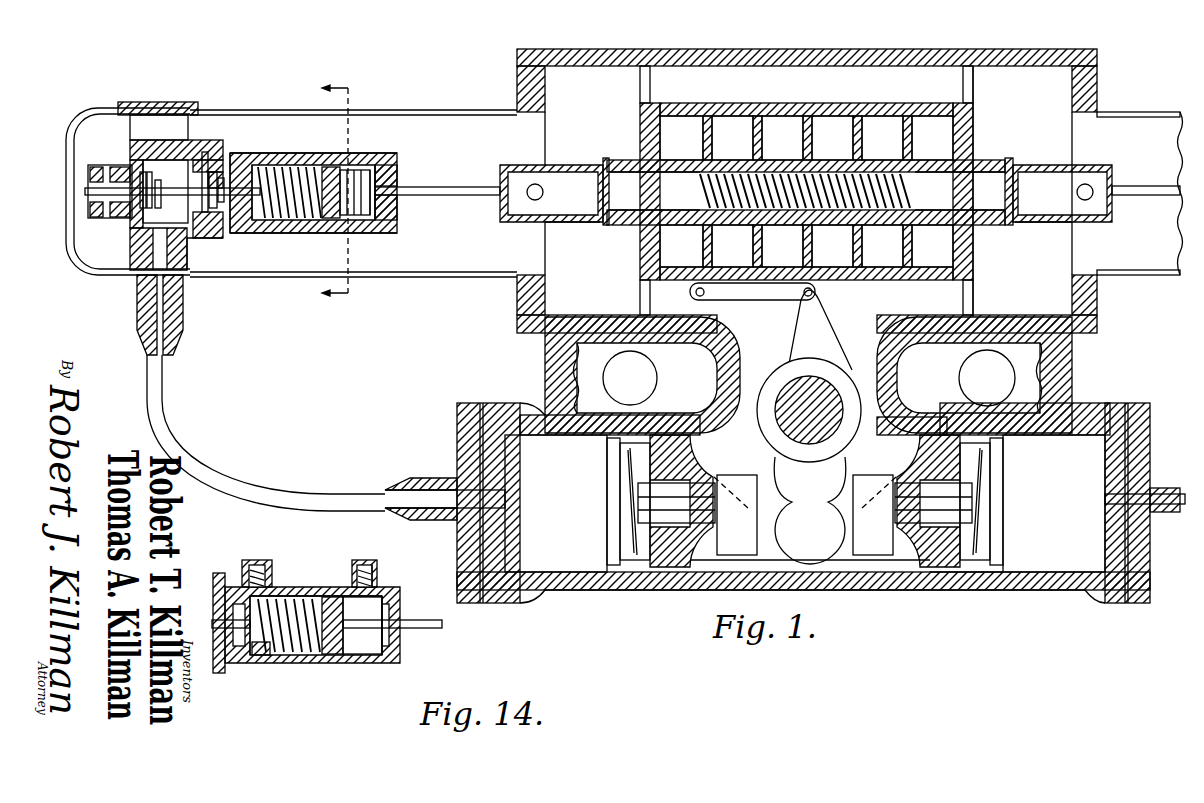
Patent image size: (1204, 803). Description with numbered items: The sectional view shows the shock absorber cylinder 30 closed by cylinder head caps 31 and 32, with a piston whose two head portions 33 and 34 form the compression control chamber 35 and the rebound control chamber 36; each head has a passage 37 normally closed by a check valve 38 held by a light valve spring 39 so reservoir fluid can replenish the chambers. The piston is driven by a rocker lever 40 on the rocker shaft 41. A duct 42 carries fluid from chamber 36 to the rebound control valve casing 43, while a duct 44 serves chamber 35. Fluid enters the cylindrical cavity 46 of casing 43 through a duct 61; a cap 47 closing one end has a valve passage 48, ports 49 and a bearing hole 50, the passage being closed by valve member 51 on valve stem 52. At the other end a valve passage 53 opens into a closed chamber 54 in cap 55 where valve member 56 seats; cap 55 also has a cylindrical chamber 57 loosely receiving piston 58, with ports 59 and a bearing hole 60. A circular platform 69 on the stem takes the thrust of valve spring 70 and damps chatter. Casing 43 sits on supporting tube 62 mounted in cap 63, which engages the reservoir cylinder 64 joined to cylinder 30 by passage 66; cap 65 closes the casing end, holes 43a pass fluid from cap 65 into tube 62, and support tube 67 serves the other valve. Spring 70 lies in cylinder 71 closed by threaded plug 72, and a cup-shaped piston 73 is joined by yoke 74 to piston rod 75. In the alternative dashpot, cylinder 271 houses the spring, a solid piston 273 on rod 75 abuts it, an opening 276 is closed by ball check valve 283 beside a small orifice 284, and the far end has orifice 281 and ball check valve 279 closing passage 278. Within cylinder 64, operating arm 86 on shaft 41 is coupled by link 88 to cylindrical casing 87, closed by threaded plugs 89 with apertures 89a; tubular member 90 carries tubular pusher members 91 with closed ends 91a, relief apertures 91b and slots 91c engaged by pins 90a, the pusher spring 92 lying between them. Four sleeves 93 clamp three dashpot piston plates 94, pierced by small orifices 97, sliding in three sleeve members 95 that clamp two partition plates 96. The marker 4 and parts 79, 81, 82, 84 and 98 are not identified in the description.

In FIG. 1, the cylinder 30 is at (879, 592).
In FIG. 1, the cylinder head cap 31 is at (465, 560).
In FIG. 1, the cylinder head cap 32 is at (1142, 603).
In FIG. 1, the piston head portion 33 is at (653, 588).
In FIG. 1, the piston head portion 34 is at (965, 592).
In FIG. 1, the spring compression control chamber 35 is at (1060, 440).
In FIG. 1, the spring rebound control chamber 36 is at (540, 440).
In FIG. 1, the passage 37 is at (740, 508).
In FIG. 1, the check valve 38 is at (660, 495).
In FIG. 1, the valve spring 39 is at (612, 535).
In FIG. 1, the rocker lever 40 is at (775, 468).
In FIG. 1, the rocker shaft 41 is at (835, 420).
In FIG. 1, the duct 42 is at (245, 478).
In FIG. 1, the rebound control valve casing 43 is at (158, 104).
In FIG. 1, the holes 43a is at (140, 125).
In FIG. 1, the duct 44 is at (1170, 488).
In FIG. 1, the cylindrical cavity 46 is at (188, 285).
In FIG. 1, the cap 47 is at (100, 220).
In FIG. 1, the valve passage 48 is at (118, 222).
In FIG. 1, the ports 49 is at (112, 166).
In FIG. 1, the valve stem bearing hole 50 is at (92, 185).
In FIG. 1, the valve member 51 is at (165, 191).
In FIG. 1, the valve stem 52 is at (172, 201).
In FIG. 14, the valve stem 52 is at (208, 622).
In FIG. 1, the valve passage 53 is at (164, 190).
In FIG. 1, the closed chamber 54 is at (205, 140).
In FIG. 1, the cap 55 is at (205, 250).
In FIG. 14, the cap 55 is at (215, 585).
In FIG. 1, the valve member 56 is at (170, 203).
In FIG. 1, the cylindrical chamber 57 is at (222, 242).
In FIG. 1, the piston 58 is at (213, 172).
In FIG. 1, the ports 59 is at (205, 152).
In FIG. 1, the valve stem bearing hole 60 is at (222, 178).
In FIG. 1, the duct 61 is at (135, 258).
In FIG. 1, the supporting tube 62 is at (403, 110).
In FIG. 1, the cap 63 is at (517, 80).
In FIG. 1, the cylinder 64 is at (640, 49).
In FIG. 1, the cap 65 is at (70, 122).
In FIG. 1, the passage 66 is at (722, 370).
In FIG. 1, the support tube 67 is at (1152, 112).
In FIG. 1, the circular platform 69 is at (262, 225).
In FIG. 14, the circular platform 69 is at (250, 663).
In FIG. 1, the valve spring 70 is at (290, 235).
In FIG. 14, the valve spring 70 is at (310, 663).
In FIG. 1, the cylinder 71 is at (395, 158).
In FIG. 1, the threaded plug 72 is at (397, 218).
In FIG. 14, the threaded plug 72 is at (400, 650).
In FIG. 1, the cup-shaped piston 73 is at (360, 165).
In FIG. 1, the yoke 74 is at (397, 185).
In FIG. 1, the piston rod 75 is at (480, 180).
In FIG. 14, the piston rod 75 is at (442, 626).
In FIG. 1, the piston 79 is at (330, 222).
In FIG. 1, the spring 81 is at (300, 165).
In FIG. 1, the spacer 82 is at (360, 225).
In FIG. 1, the cylinder top wall 84 is at (395, 230).
In FIG. 1, the operating arm 86 is at (828, 325).
In FIG. 1, the cylindrical casing 87 is at (664, 288).
In FIG. 1, the link 88 is at (745, 300).
In FIG. 1, the threaded plugs 89 is at (645, 125).
In FIG. 1, the apertures 89a is at (642, 85).
In FIG. 1, the tubular member 90 is at (605, 166).
In FIG. 1, the pins 90a is at (611, 192).
In FIG. 1, the tubular pusher members 91 is at (698, 182).
In FIG. 1, the closed ends 91a is at (530, 222).
In FIG. 1, the pressure relief apertures 91b is at (543, 192).
In FIG. 1, the longitudinal slots 91c is at (575, 222).
In FIG. 1, the pusher spring 92 is at (900, 186).
In FIG. 1, the tubular sleeves 93 is at (702, 160).
In FIG. 1, the dashpot piston plates 94 is at (702, 247).
In FIG. 1, the sleeve members 95 is at (738, 265).
In FIG. 1, the partition plates 96 is at (750, 135).
In FIG. 1, the small orifices 97 is at (781, 138).
In FIG. 1, the end cell 98 is at (949, 158).
In FIG. 14, the cylinder 271 is at (325, 595).
In FIG. 14, the solid piston 273 is at (330, 655).
In FIG. 14, the opening 276 is at (272, 598).
In FIG. 14, the passage 278 is at (375, 575).
In FIG. 14, the ball check valve 279 is at (364, 565).
In FIG. 14, the small orifice 281 is at (362, 655).
In FIG. 14, the ball check valve 283 is at (260, 566).
In FIG. 14, the small orifice 284 is at (262, 655).
In FIG. 1, the section line 4 is at (335, 193).